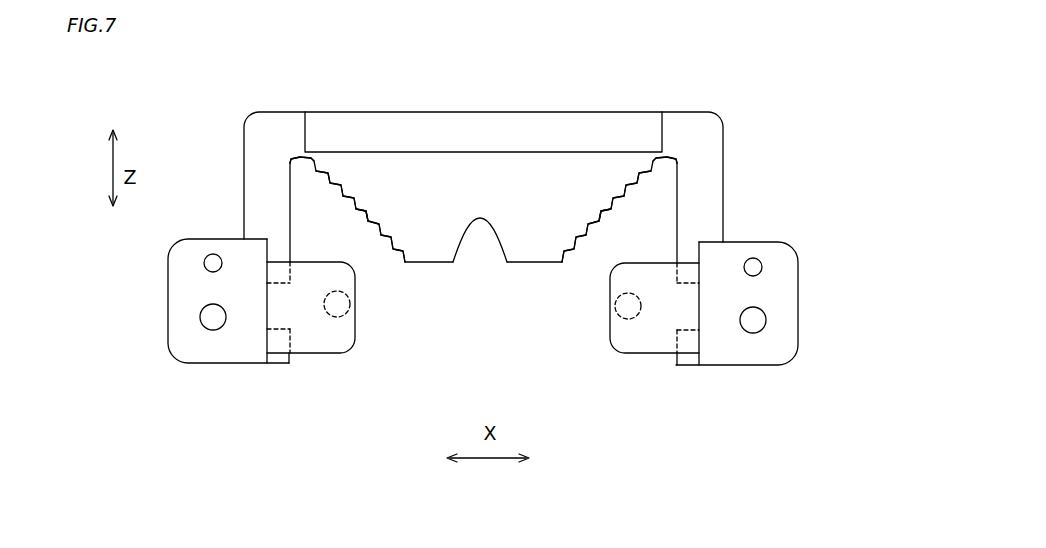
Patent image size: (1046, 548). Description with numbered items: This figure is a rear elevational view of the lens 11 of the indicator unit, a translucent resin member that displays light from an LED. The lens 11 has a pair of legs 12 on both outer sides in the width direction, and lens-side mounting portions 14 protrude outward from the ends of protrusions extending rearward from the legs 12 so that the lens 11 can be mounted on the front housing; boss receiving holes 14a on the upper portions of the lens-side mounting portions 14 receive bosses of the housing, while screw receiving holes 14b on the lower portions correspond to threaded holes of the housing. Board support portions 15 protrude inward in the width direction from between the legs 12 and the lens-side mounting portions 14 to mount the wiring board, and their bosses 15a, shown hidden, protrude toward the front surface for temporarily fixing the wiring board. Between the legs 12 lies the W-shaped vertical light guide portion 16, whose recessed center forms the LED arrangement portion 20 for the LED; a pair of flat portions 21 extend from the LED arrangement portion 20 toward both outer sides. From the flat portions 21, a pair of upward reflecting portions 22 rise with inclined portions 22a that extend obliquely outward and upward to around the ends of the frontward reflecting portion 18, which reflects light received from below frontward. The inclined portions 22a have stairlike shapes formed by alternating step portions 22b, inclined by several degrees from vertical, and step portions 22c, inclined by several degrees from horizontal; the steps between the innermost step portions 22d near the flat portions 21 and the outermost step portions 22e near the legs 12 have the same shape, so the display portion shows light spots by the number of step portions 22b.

The lens 11 is at (763, 104).
The legs 12 is at (265, 170).
The lens-side mounting portions 14 is at (215, 353).
The boss receiving holes 14a is at (204, 263).
The screw receiving holes 14b is at (200, 317).
The board support portions 15 is at (308, 342).
The bosses 15a is at (337, 317).
The vertical light guide portion 16 is at (445, 172).
The frontward reflecting portion 18 is at (488, 145).
The LED arrangement portion 20 is at (480, 218).
The flat portions 21 is at (433, 263).
The upward reflecting portions 22 is at (372, 220).
The inclined portions 22a is at (355, 223).
The step portions 22b is at (357, 205).
The step portions 22c is at (333, 183).
The innermost step portions 22d is at (407, 258).
The outermost step portions 22e is at (295, 160).